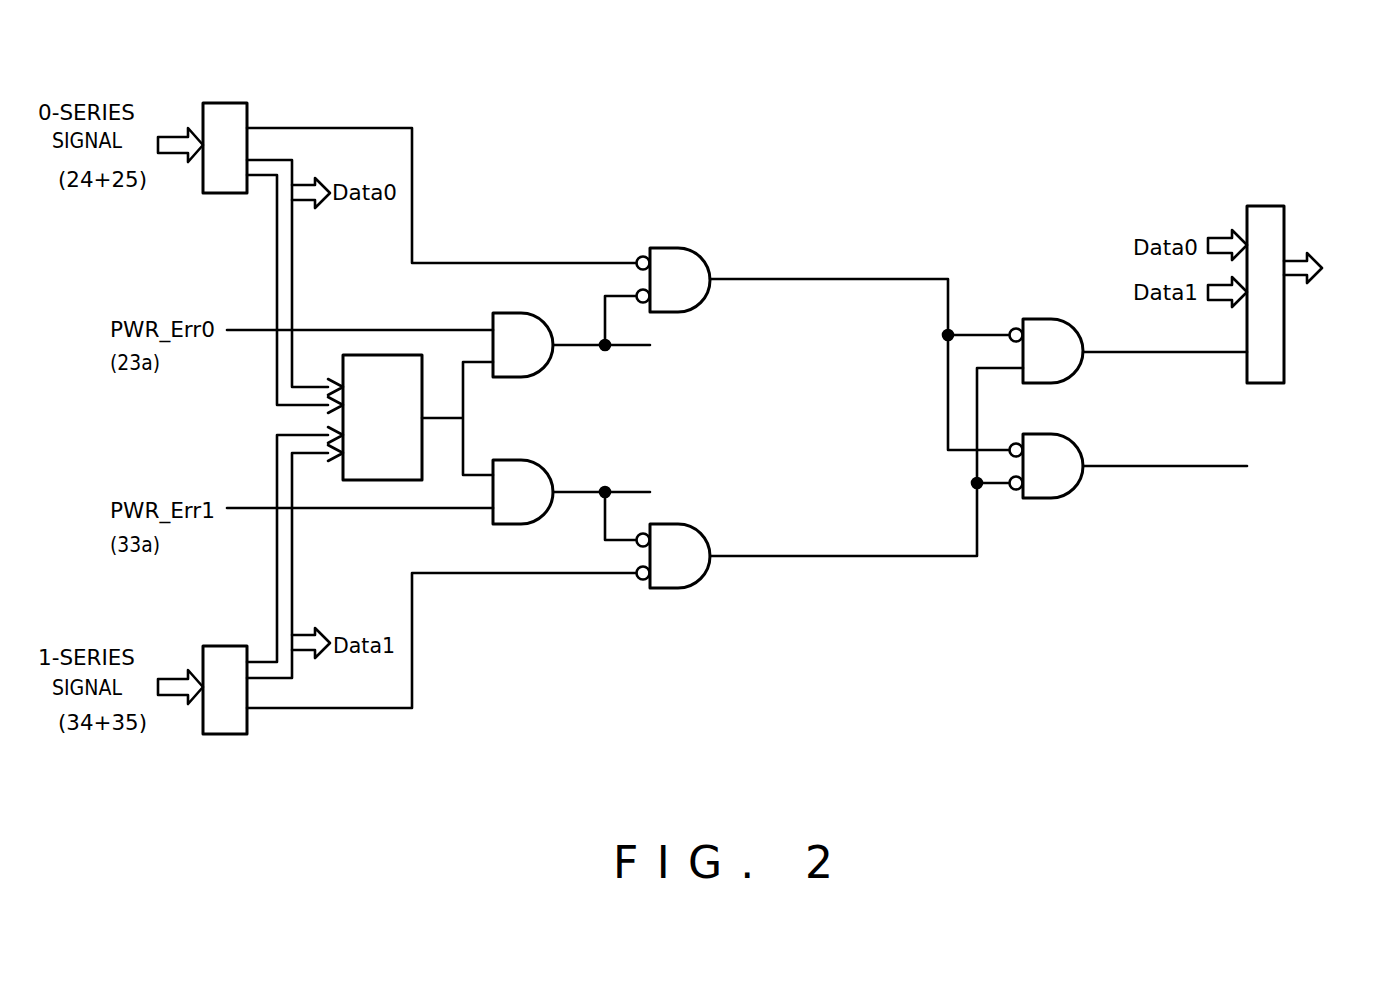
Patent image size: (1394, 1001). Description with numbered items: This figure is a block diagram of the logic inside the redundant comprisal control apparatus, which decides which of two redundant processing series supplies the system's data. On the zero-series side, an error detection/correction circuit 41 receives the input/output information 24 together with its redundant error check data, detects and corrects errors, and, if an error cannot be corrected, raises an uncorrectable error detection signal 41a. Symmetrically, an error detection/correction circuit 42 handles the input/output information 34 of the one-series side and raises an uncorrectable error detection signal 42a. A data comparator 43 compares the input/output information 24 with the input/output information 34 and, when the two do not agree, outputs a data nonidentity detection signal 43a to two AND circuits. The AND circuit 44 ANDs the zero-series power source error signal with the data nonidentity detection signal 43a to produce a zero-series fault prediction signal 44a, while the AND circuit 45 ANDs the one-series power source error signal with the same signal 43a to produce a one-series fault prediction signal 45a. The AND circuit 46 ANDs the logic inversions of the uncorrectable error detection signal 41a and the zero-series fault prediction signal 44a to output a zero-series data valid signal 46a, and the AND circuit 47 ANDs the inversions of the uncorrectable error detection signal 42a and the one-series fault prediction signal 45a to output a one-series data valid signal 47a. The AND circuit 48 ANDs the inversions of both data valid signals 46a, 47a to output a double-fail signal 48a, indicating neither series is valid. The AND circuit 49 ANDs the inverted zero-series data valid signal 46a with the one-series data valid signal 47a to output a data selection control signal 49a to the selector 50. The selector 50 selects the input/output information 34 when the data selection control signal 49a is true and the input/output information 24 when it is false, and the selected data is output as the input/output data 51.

The input/output information 24 is at (277, 232).
The input/output information 34 is at (277, 530).
The error detection/correction circuit 41 is at (222, 103).
The uncorrectable error detection signal 41a is at (412, 195).
The error detection/correction circuit 42 is at (230, 734).
The uncorrectable error detection signal 42a is at (412, 652).
The data comparator 43 is at (368, 355).
The data nonidentity detection signal 43a is at (457, 423).
The AND circuit 44 is at (508, 313).
The 0-series fault prediction signal 44a is at (577, 347).
The AND circuit 45 is at (508, 460).
The 1-series fault prediction signal 45a is at (617, 492).
The AND circuit 46 is at (673, 248).
The 0-series data valid signal 46a is at (920, 278).
The AND circuit 47 is at (673, 588).
The 1-series data valid signal 47a is at (932, 556).
The AND circuit 48 is at (1050, 498).
The double_fail signal 48a is at (1172, 465).
The AND circuit 49 is at (1040, 318).
The data selection control signal 49a is at (1170, 352).
The selector 50 is at (1265, 206).
The input/output data 51 is at (1293, 257).